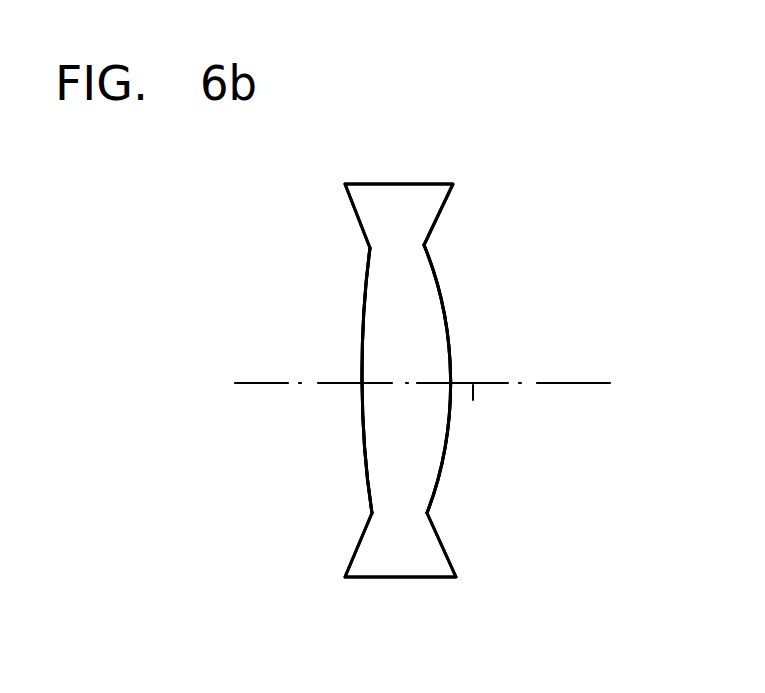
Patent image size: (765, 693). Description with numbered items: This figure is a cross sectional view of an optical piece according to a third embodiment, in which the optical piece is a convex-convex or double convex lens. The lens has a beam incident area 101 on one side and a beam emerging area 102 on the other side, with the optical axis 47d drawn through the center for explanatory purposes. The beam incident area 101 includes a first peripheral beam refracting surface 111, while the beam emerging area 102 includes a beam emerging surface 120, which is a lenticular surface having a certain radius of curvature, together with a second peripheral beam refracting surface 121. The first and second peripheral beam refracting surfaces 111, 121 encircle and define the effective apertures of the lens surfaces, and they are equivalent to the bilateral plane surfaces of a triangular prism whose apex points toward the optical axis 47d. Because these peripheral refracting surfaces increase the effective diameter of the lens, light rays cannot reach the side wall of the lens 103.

The beam incident area 101 is at (315, 297).
The beam emerging area 102 is at (530, 357).
The side wall of the lens 103 is at (430, 183).
The first peripheral beam refracting surface 111 is at (362, 232).
The beam emerging surface 120 is at (447, 323).
The second peripheral beam refracting surface 121 is at (435, 229).
The optical axis 47d is at (478, 410).